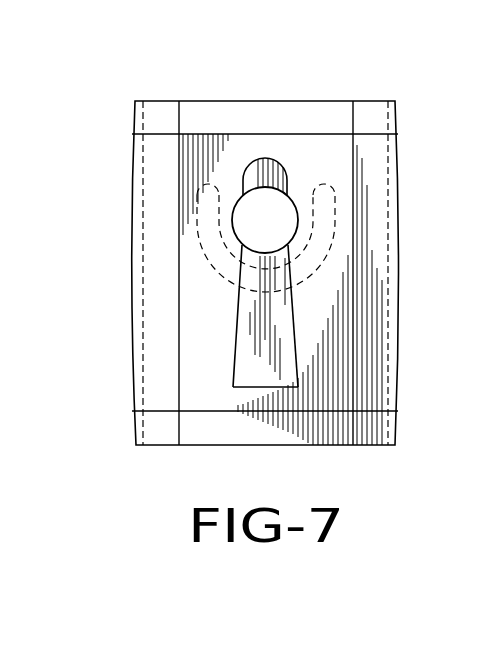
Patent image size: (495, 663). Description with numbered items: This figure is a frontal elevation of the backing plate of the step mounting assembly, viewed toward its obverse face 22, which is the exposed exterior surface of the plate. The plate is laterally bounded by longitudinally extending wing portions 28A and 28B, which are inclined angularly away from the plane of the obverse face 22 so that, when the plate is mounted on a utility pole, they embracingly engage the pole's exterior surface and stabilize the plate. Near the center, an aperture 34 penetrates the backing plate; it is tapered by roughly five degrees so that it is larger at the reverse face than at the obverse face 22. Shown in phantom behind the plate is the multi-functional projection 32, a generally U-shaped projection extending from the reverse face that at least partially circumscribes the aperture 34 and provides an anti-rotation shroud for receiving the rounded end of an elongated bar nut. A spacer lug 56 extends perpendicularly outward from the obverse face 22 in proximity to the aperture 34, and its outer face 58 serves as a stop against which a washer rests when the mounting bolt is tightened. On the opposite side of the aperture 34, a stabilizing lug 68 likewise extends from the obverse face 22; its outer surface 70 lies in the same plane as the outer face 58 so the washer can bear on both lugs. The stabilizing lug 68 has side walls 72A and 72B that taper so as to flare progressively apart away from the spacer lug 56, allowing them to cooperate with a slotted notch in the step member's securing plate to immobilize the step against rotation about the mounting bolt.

The obverse face 22 is at (203, 390).
The wing portion 28A is at (158, 153).
The wing portion 28B is at (372, 152).
The multi-functional projection 32 is at (229, 270).
The aperture 34 is at (273, 225).
The spacer lug 56 is at (277, 166).
The outer face 58 is at (247, 160).
The stabilizing lug 68 is at (241, 304).
The outer surface 70 is at (288, 305).
The side wall 72A is at (236, 342).
The side wall 72B is at (295, 342).